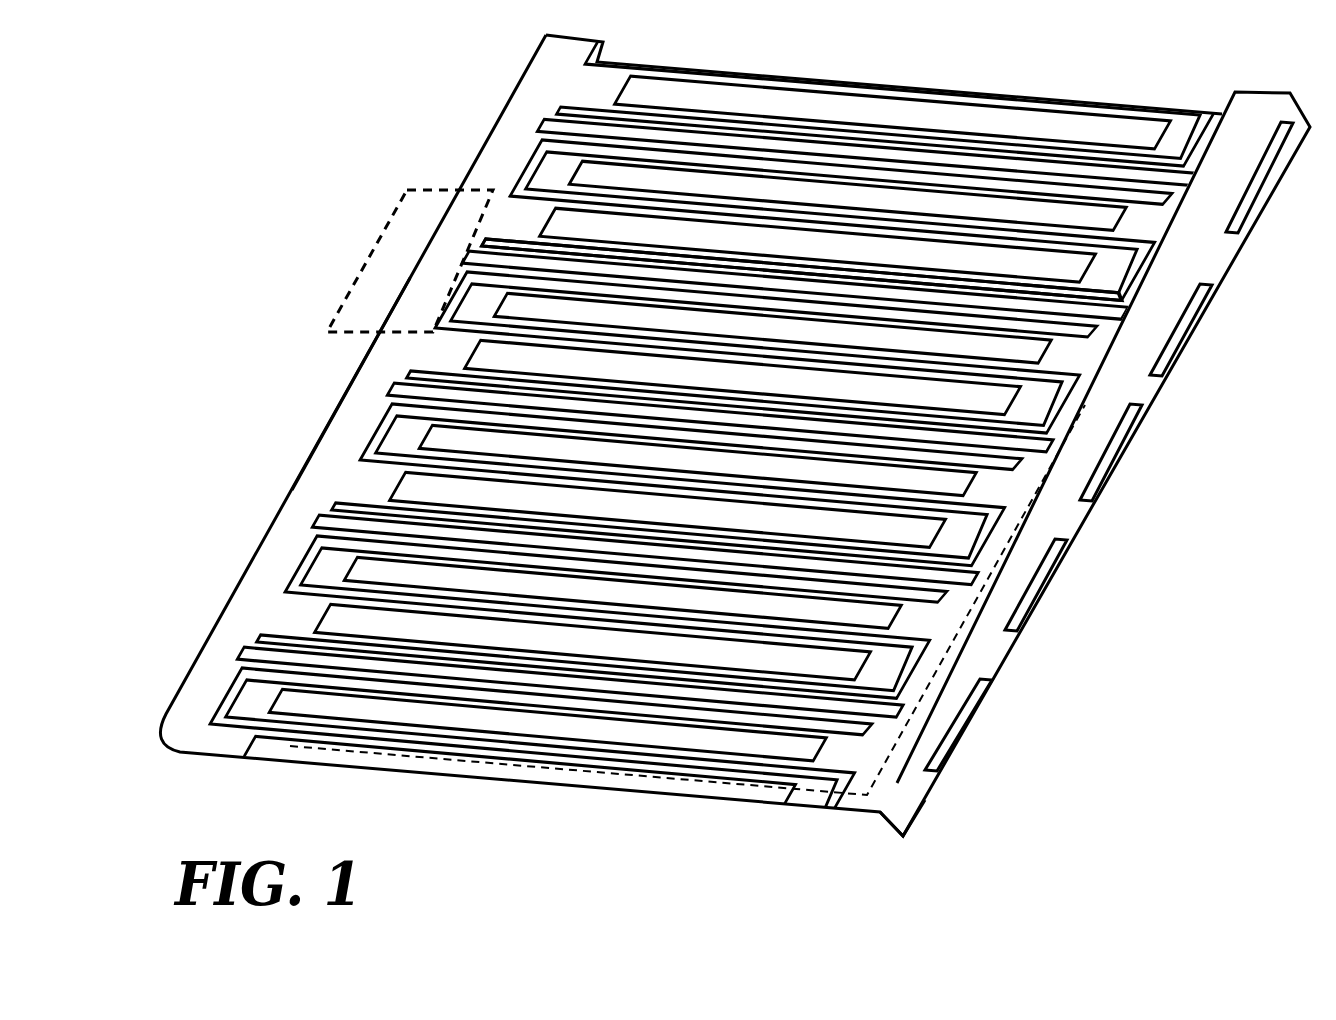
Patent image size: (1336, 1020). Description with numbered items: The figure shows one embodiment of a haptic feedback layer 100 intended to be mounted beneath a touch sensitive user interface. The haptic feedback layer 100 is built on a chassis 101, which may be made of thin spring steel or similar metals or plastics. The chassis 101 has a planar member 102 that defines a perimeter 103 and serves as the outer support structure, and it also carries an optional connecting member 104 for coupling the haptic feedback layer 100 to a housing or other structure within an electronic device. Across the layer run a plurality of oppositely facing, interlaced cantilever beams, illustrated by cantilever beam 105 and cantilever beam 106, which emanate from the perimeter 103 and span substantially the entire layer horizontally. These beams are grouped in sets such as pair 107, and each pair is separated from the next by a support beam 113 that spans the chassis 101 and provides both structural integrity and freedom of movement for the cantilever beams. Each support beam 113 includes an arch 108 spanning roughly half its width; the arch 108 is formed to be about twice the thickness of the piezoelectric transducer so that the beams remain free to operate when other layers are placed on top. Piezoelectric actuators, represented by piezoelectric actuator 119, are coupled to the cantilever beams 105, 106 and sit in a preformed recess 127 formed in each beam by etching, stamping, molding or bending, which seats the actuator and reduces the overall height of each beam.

The haptic feedback layer 100 is at (250, 185).
The chassis 101 is at (185, 657).
The planar member 102 is at (320, 470).
The perimeter 103 is at (553, 773).
The connecting member 104 is at (913, 790).
The cantilever beam 105 is at (847, 195).
The cantilever beam 106 is at (757, 352).
The pair 107 is at (373, 242).
The arch 108 is at (795, 285).
The support beam 113 is at (804, 269).
The piezoelectric actuator 119 is at (832, 220).
The preformed recess 127 is at (818, 245).